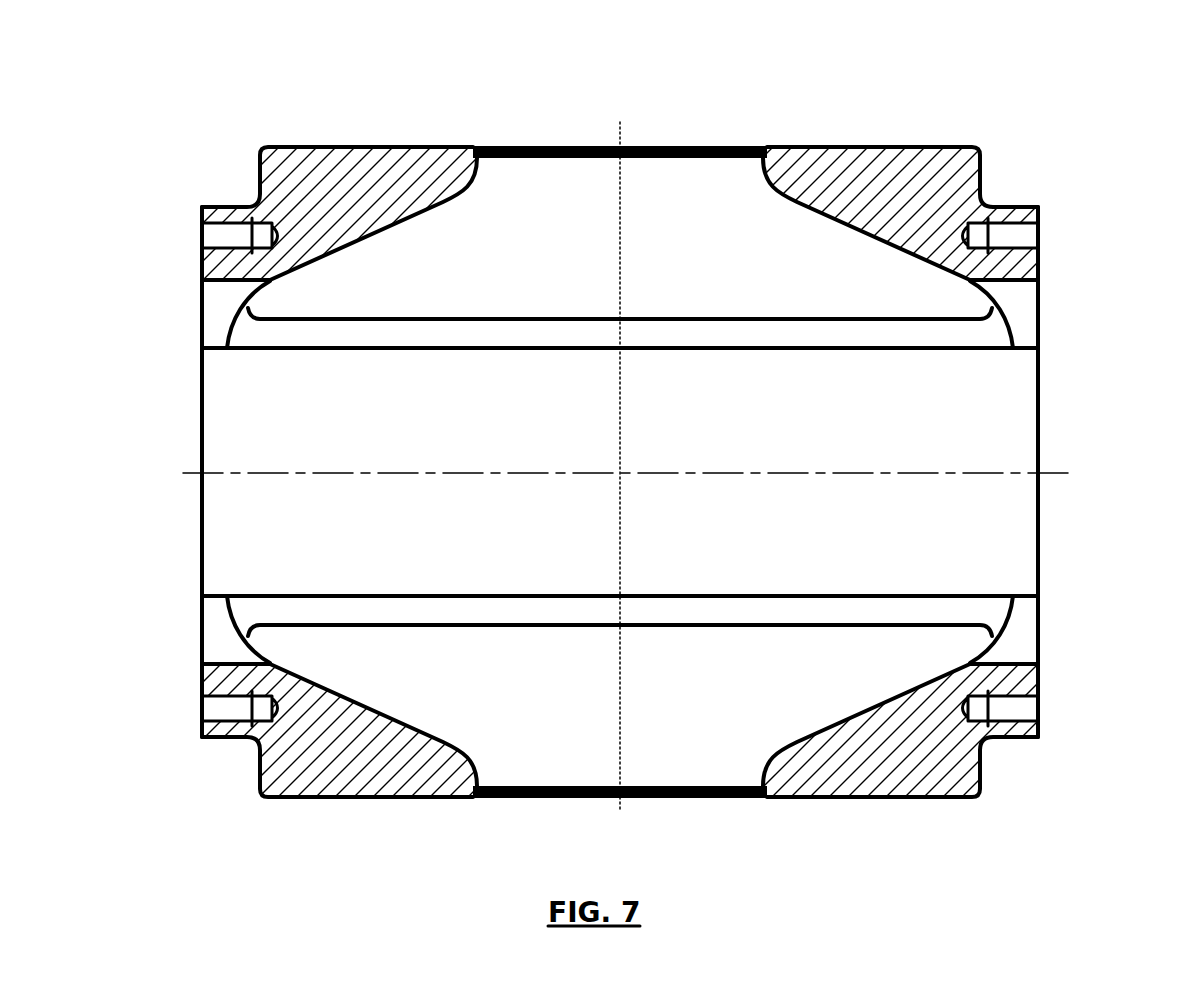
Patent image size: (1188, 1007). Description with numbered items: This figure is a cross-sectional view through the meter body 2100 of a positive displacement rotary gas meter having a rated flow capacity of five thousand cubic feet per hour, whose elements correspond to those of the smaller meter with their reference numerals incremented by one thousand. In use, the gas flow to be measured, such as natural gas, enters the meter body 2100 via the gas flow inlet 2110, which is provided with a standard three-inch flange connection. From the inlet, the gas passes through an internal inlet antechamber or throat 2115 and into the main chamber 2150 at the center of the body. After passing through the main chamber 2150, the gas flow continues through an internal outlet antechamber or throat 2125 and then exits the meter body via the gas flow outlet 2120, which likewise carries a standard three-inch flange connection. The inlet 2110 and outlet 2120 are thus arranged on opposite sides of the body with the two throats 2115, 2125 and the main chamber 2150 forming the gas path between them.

The meter body 2100 is at (1057, 56).
The gas flow inlet 2110 is at (707, 168).
The internal inlet antechamber or throat 2115 is at (428, 250).
The gas flow outlet 2120 is at (690, 777).
The internal outlet antechamber or throat 2125 is at (466, 722).
The main chamber 2150 is at (1000, 403).